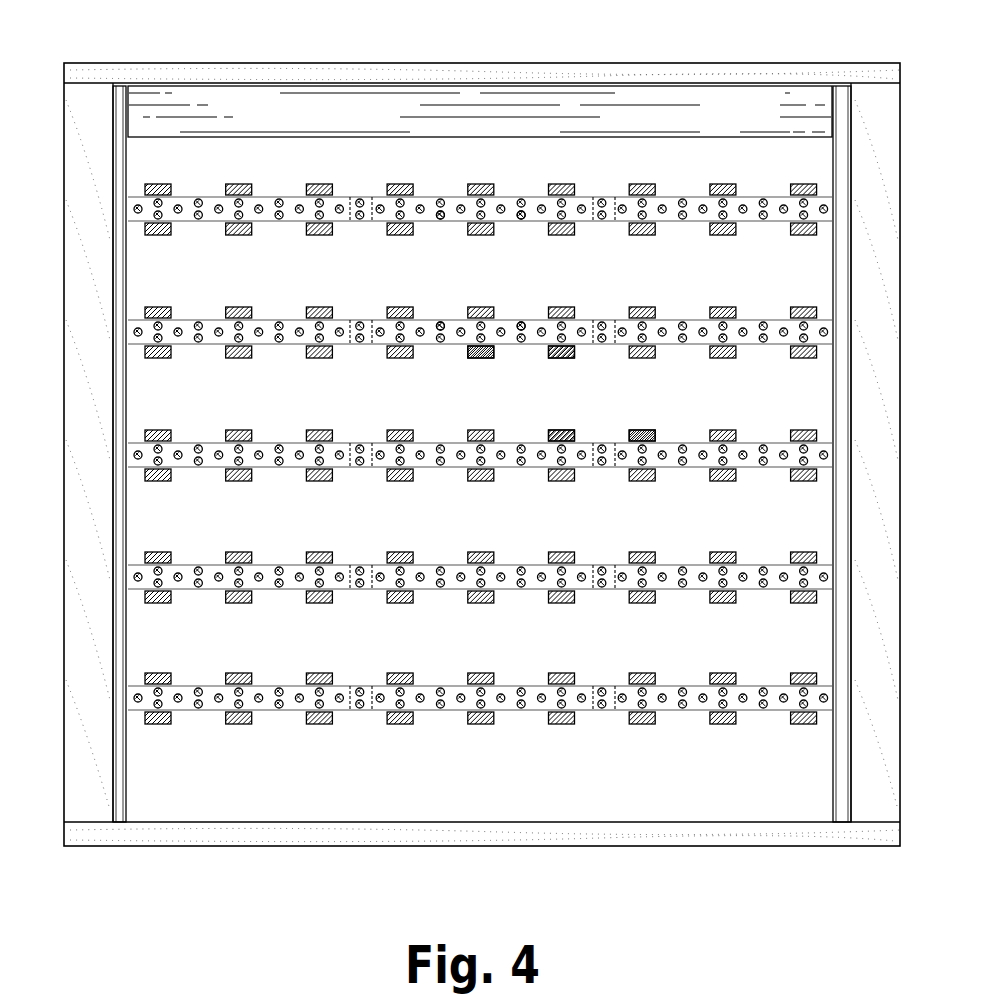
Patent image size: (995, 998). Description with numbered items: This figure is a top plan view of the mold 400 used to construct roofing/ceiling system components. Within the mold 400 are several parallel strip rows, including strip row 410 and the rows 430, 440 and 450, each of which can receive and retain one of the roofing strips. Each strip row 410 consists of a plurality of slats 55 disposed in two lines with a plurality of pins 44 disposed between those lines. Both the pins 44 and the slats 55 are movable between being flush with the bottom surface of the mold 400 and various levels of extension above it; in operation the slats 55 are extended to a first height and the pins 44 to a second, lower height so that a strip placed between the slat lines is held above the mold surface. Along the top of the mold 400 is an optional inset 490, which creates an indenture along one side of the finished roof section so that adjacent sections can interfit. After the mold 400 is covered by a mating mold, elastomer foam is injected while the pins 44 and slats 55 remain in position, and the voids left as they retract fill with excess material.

The mold 400 is at (482, 424).
The inset 490 is at (542, 103).
The strip row 410 is at (692, 187).
The light strip 430 is at (722, 490).
The light strip 440 is at (722, 615).
The light strip 450 is at (722, 737).
The pins 44 is at (523, 322).
The slats 55 is at (633, 430).